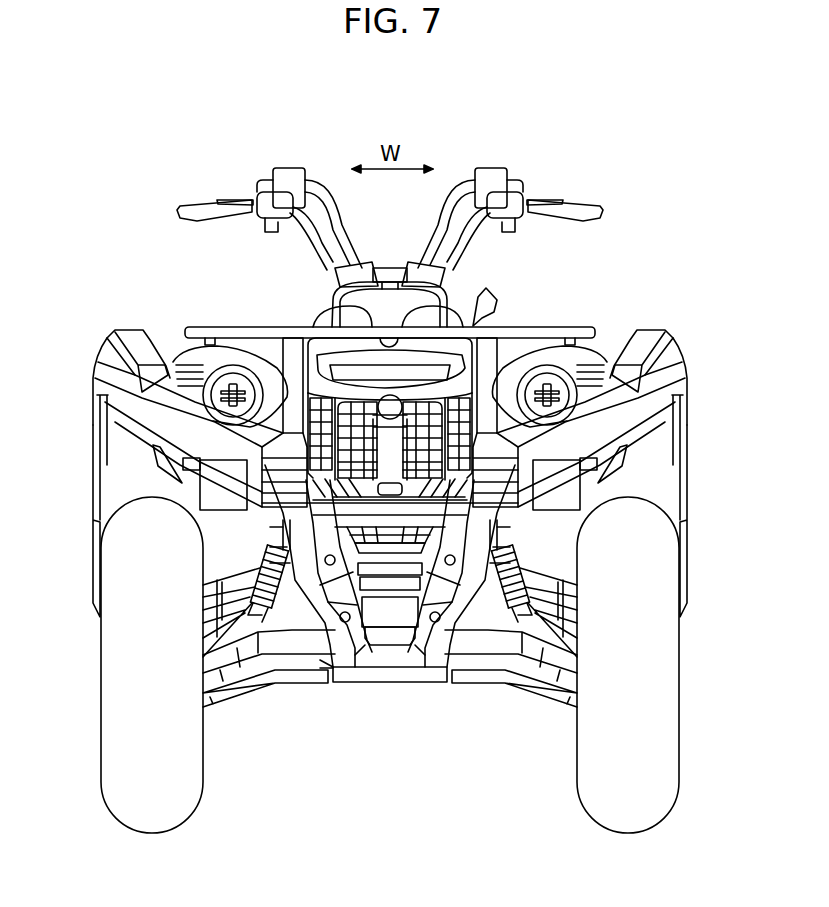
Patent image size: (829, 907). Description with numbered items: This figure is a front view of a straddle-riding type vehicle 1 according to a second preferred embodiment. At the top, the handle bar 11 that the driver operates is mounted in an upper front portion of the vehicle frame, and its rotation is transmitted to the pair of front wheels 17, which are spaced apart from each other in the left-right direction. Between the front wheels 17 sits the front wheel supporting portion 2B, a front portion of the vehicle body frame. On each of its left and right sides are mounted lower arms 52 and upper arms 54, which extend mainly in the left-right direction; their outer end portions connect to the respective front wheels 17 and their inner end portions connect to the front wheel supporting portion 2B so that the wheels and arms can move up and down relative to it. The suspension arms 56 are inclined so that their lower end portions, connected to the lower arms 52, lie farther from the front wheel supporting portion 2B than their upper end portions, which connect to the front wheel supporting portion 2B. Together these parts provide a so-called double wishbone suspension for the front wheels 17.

The straddle-riding type vehicle 1 is at (178, 168).
The handle bar 11 is at (543, 198).
The suspension arms 56 is at (268, 546).
The upper arms 54 is at (232, 585).
The lower arms 52 is at (236, 648).
The front wheel supporting portion 2B is at (395, 620).
The front wheels 17 is at (158, 807).